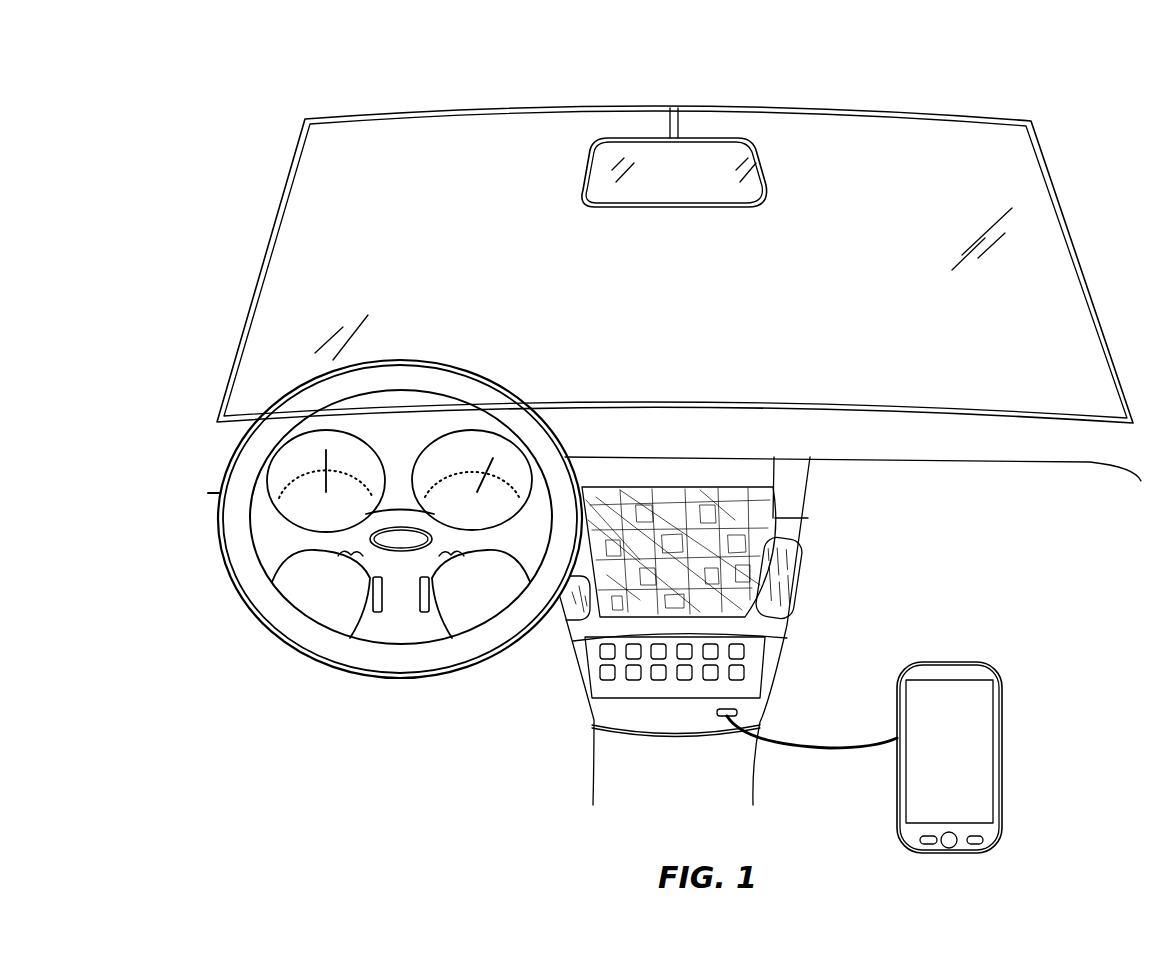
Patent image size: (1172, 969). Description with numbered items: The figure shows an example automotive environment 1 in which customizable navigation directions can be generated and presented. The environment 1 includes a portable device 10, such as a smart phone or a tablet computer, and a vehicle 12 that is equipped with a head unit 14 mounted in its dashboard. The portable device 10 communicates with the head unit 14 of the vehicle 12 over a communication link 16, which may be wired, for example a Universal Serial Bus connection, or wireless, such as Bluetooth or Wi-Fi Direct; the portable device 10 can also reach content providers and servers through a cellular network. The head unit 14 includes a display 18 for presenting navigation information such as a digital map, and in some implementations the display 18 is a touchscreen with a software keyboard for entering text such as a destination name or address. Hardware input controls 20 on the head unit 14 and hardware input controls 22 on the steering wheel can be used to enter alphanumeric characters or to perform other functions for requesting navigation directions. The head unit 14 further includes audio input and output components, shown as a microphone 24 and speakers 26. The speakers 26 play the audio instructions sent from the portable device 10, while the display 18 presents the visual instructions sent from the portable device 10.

The environment 1 is at (404, 60).
The portable device 10 is at (957, 662).
The vehicle 12 is at (368, 538).
The head unit 14 is at (724, 444).
The communication link 16 is at (811, 735).
The display 18 is at (757, 509).
The hardware input controls 20 is at (596, 664).
The hardware input controls 22 is at (363, 600).
The microphone 24 is at (568, 603).
The speakers 26 is at (786, 577).